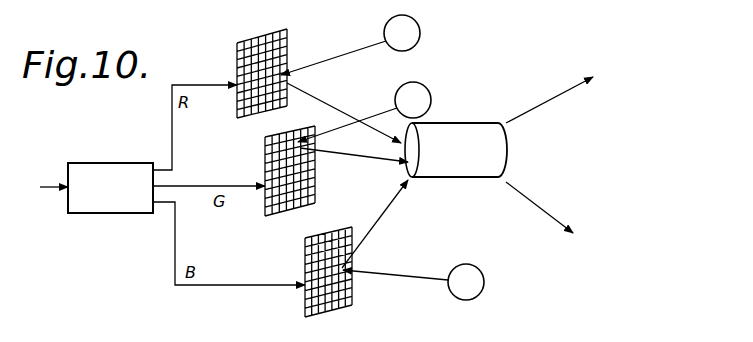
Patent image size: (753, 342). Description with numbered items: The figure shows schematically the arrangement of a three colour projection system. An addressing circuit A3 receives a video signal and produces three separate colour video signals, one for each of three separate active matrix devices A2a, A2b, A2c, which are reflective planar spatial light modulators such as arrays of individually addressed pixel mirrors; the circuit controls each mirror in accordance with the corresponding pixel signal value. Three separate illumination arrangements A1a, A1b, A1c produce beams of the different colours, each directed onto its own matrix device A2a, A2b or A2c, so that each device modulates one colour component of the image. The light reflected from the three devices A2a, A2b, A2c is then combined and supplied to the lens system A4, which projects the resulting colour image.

The addressing circuit A3 is at (100, 163).
The active matrix device A2a is at (285, 41).
The active matrix device A2b is at (316, 183).
The active matrix device A2c is at (353, 290).
The illumination arrangement A1a is at (419, 43).
The illumination arrangement A1b is at (431, 99).
The illumination arrangement A1c is at (483, 277).
The lens system A4 is at (455, 170).